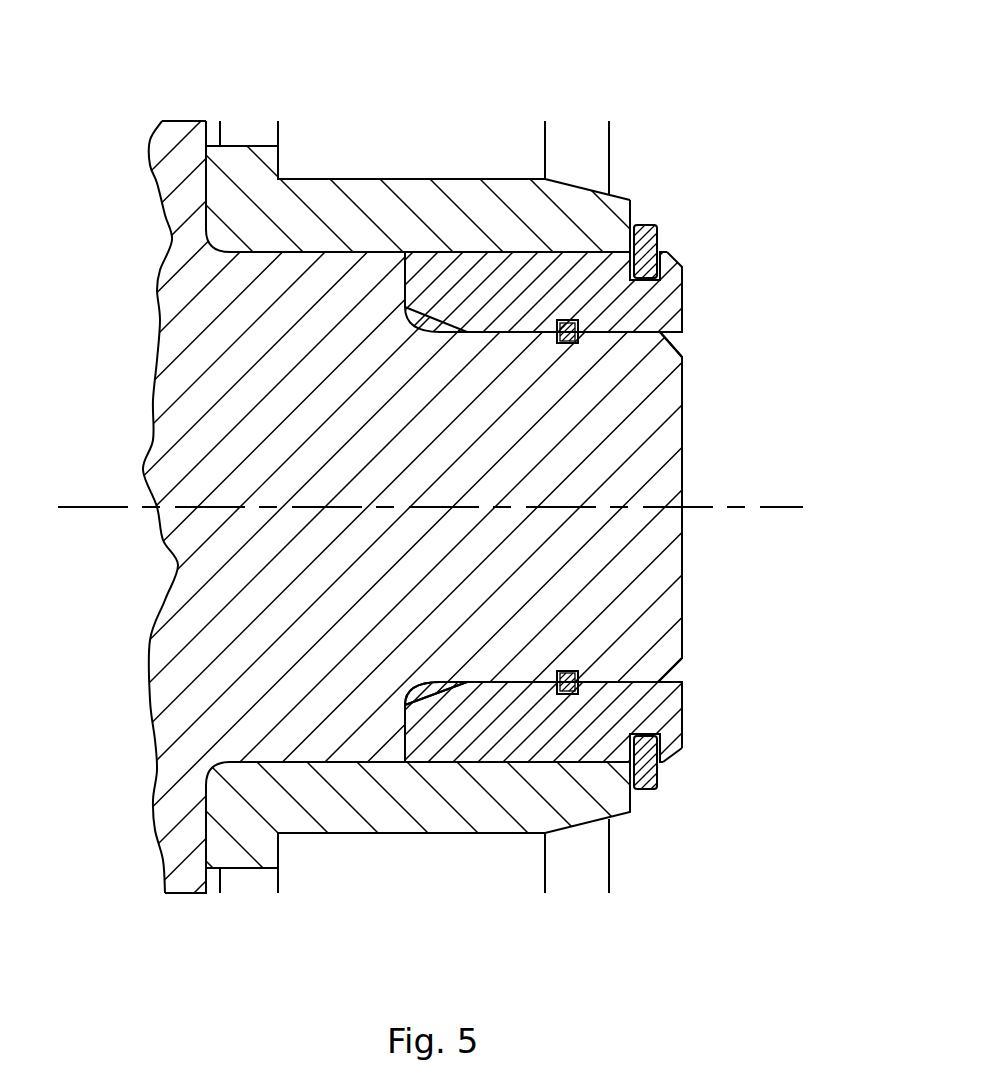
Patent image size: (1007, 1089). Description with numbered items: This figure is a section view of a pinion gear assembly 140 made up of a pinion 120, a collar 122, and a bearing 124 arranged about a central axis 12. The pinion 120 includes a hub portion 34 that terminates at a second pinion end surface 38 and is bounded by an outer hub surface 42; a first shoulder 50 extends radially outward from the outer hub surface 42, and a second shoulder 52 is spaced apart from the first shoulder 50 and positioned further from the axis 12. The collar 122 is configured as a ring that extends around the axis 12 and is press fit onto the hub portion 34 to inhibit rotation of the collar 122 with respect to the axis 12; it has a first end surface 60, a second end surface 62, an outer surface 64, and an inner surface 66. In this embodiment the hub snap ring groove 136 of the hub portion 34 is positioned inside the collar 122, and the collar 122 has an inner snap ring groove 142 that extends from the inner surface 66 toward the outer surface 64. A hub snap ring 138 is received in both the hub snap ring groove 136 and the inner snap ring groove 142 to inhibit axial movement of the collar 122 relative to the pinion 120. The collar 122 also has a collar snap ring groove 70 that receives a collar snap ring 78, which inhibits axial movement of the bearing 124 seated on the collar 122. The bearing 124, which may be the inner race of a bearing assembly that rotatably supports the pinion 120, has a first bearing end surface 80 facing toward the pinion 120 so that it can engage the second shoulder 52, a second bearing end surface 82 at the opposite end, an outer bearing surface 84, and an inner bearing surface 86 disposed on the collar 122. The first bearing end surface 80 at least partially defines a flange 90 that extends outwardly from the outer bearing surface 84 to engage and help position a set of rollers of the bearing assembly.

The axis 12 is at (777, 507).
The hub portion 34 is at (437, 602).
The second pinion end surface 38 is at (573, 668).
The outer hub surface 42 is at (402, 693).
The first shoulder 50 is at (457, 683).
The first end surface 60 is at (423, 798).
The second shoulder 52 is at (206, 828).
The second end surface 62 is at (682, 722).
The outer surface 64 is at (449, 763).
The inner surface 66 is at (518, 682).
The collar snap ring groove 70 is at (645, 281).
The collar snap ring 78 is at (656, 224).
The first bearing end surface 80 is at (206, 183).
The second bearing end surface 82 is at (632, 222).
The outer bearing surface 84 is at (388, 179).
The inner bearing surface 86 is at (305, 252).
The flange 90 is at (248, 146).
The pinion 120 is at (150, 408).
The collar 122 is at (680, 764).
The bearing 124 is at (577, 180).
The hub snap ring groove 136 is at (568, 345).
The hub snap ring 138 is at (545, 672).
The pinion gear assembly 140 is at (622, 70).
The inner snap ring groove 142 is at (578, 325).